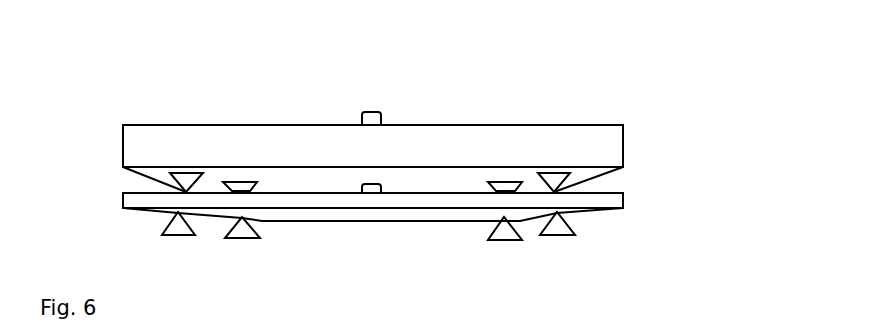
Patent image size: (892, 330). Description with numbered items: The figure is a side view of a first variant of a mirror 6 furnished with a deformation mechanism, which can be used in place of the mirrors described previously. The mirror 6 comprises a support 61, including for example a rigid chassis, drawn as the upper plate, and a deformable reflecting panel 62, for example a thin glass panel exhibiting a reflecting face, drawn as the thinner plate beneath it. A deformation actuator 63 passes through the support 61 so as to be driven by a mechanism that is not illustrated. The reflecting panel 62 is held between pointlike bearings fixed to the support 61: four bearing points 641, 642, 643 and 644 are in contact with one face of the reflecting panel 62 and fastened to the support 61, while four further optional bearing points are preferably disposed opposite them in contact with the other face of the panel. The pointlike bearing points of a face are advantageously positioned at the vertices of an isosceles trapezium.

The mirror 6 is at (102, 68).
The support 61 is at (123, 144).
The deformable reflecting panel 62 is at (123, 199).
The deformation actuator 63 is at (370, 112).
The bearing point 641 is at (173, 187).
The bearing point 642 is at (240, 182).
The bearing point 643 is at (560, 189).
The bearing point 644 is at (505, 182).